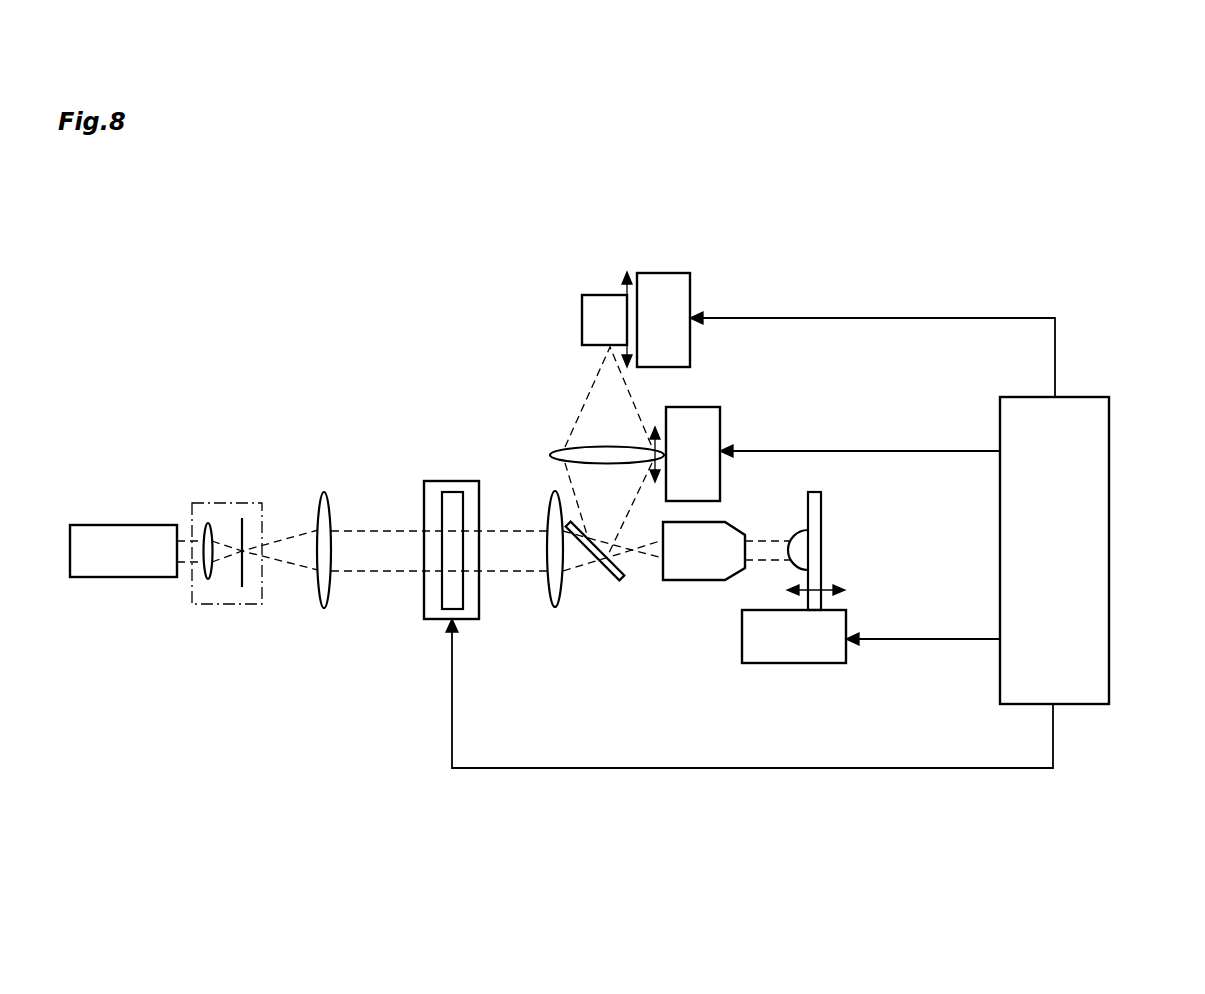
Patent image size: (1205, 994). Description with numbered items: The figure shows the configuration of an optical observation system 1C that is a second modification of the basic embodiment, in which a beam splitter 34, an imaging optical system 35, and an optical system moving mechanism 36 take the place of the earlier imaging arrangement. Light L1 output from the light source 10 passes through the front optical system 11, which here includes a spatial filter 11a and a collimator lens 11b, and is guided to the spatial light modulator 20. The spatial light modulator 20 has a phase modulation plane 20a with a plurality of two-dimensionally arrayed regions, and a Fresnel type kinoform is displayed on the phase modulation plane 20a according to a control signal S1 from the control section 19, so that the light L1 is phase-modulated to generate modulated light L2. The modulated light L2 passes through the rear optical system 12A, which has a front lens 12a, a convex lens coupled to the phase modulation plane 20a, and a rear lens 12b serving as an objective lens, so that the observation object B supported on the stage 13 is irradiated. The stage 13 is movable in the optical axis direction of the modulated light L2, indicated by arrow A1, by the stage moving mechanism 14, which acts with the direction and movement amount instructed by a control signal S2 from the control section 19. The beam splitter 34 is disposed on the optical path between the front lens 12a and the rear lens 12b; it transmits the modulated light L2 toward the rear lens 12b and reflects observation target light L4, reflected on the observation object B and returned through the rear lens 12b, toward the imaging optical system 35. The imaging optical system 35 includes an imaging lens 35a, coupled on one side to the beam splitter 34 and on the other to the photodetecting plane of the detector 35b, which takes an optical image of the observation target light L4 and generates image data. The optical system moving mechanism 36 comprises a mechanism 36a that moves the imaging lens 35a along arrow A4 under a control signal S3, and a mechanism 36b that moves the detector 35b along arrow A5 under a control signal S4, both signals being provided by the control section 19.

The optical observation system 1C is at (978, 210).
The light source 10 is at (125, 578).
The front optical system 11 is at (213, 707).
The spatial filter 11a is at (231, 606).
The collimator lens 11b is at (322, 610).
The rear optical system 12A is at (710, 668).
The front lens 12a is at (562, 597).
The rear lens 12b is at (693, 582).
The stage 13 is at (823, 512).
The stage moving mechanism 14 is at (785, 665).
The control section 19 is at (1109, 555).
The spatial light modulator 20 is at (455, 481).
The phase modulation plane 20a is at (463, 600).
The beam splitter 34 is at (610, 578).
The imaging optical system 35 is at (466, 297).
The imaging lens 35a is at (552, 455).
The detector 35b is at (582, 310).
The optical system moving mechanism 36 is at (809, 330).
The mechanism for moving the imaging lens 36a is at (722, 423).
The mechanism for moving the detector 36b is at (692, 342).
The optical axis direction of the modulated light A1 is at (826, 585).
The optical axis direction of the observation target light in the imaging lens A4 is at (646, 447).
The optical axis direction of the observation target light in the detector A5 is at (624, 290).
The observation object B is at (791, 532).
The light L1 is at (368, 528).
The modulated light L2 is at (515, 528).
The observation target light L4 is at (590, 383).
The control signal S1 is at (749, 693).
The control signal S2 is at (923, 629).
The control signal S3 is at (860, 440).
The control signal S4 is at (872, 344).